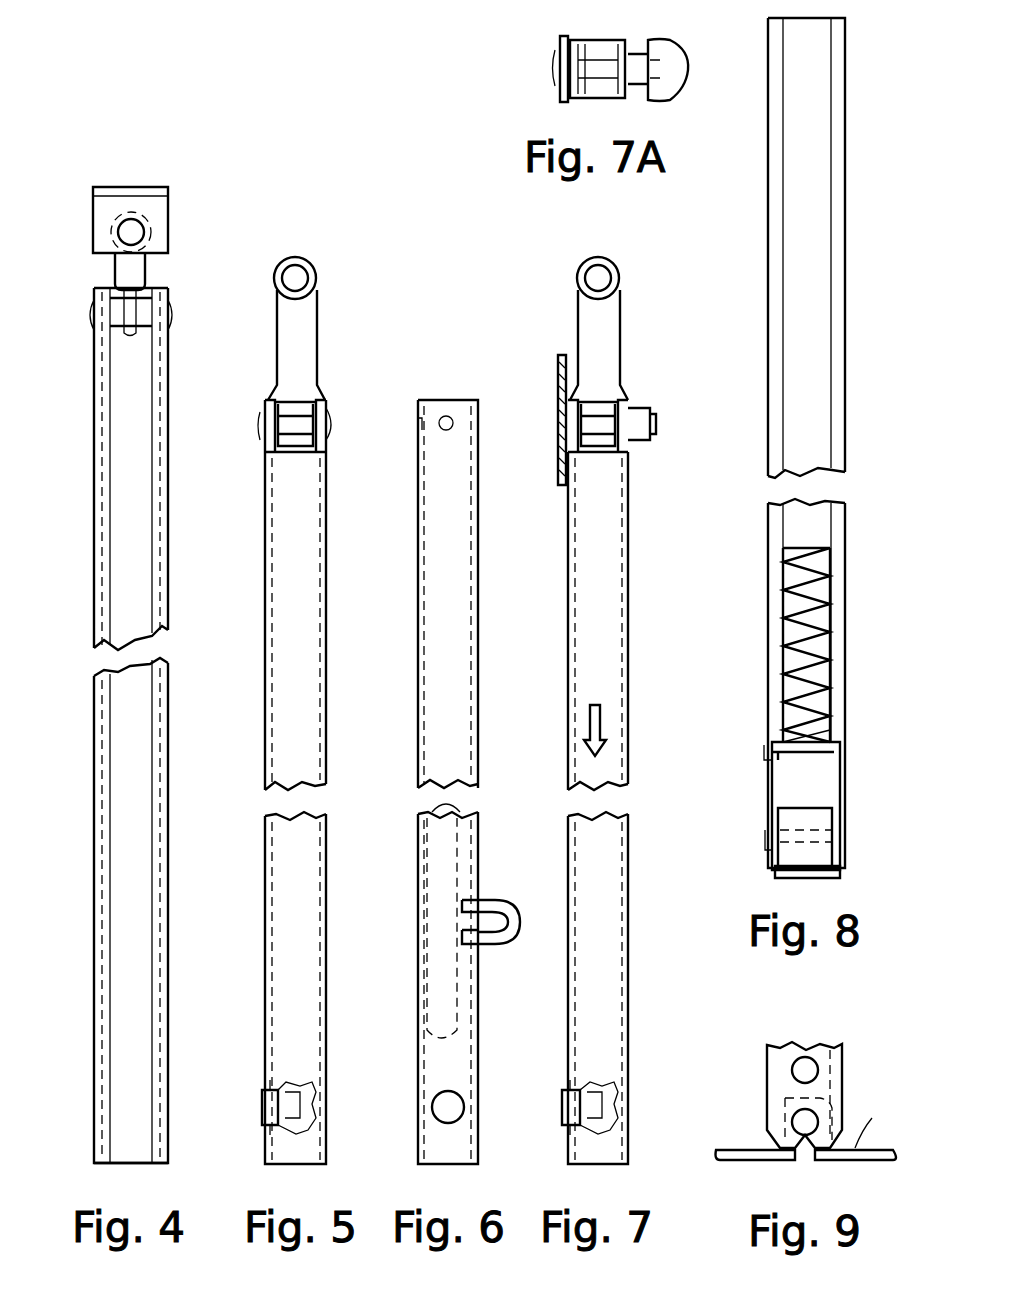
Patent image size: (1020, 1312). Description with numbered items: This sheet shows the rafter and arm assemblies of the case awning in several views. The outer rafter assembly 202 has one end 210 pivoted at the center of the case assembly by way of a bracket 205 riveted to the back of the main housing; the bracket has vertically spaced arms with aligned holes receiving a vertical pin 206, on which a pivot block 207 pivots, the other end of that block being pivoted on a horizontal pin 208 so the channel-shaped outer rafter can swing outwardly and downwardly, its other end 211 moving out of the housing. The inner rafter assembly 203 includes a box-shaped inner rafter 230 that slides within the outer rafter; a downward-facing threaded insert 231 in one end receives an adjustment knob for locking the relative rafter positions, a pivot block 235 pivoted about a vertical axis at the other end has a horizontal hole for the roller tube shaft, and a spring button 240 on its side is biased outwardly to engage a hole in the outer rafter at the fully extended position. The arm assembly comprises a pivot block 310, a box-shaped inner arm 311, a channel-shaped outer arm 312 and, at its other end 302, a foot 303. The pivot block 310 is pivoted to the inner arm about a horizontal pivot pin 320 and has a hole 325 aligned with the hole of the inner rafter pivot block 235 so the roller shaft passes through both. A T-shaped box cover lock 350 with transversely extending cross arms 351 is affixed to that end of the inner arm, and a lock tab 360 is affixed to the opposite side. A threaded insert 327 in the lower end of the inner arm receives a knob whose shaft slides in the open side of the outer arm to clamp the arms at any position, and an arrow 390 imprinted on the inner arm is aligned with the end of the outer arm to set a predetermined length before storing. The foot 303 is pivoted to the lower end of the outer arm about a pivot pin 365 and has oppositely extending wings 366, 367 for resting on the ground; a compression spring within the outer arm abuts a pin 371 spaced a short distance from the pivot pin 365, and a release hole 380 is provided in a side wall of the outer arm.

In FIG. 4, the outer rafter assembly 202 is at (95, 580).
In FIG. 5, the inner rafter assembly 203 is at (326, 690).
In FIG. 6, the inner rafter assembly 203 is at (417, 730).
In FIG. 4, the bracket 205 is at (168, 204).
In FIG. 4, the vertical pin 206 is at (144, 235).
In FIG. 4, the pivot block 207 is at (145, 268).
In FIG. 4, the horizontal pin 208 is at (170, 314).
In FIG. 4, the one end of rafter assembly 210 is at (92, 297).
In FIG. 4, the other end of rafter assembly 211 is at (160, 1163).
In FIG. 5, the inner rafter 230 is at (326, 925).
In FIG. 6, the inner rafter 230 is at (417, 1010).
In FIG. 5, the threaded insert 231 is at (258, 1108).
In FIG. 5, the pivot block 235 is at (316, 340).
In FIG. 6, the spring button 240 is at (520, 928).
In FIG. 8, the other end of arm assembly 302 is at (822, 860).
In FIG. 9, the foot 303 is at (928, 1129).
In FIG. 7, the pivot block 310 is at (612, 346).
In FIG. 7, the inner arm 311 is at (614, 575).
In FIG. 8, the outer arm 312 is at (768, 190).
In FIG. 7, the horizontal pivot pin 320 is at (600, 440).
In FIG. 8, the horizontal pivot pin 320 is at (822, 650).
In FIG. 7, the hole 325 is at (608, 276).
In FIG. 7, the threaded insert 327 is at (560, 1106).
In FIG. 7, the box cover lock 350 is at (642, 410).
In FIG. 7A, the cross arms 351 is at (672, 44).
In FIG. 7, the lock tab 360 is at (558, 385).
In FIG. 7A, the lock tab 360 is at (560, 92).
In FIG. 9, the pivot pin 365 is at (792, 1118).
In FIG. 9, the wing 366 is at (750, 1160).
In FIG. 9, the wing 367 is at (858, 1160).
In FIG. 8, the pin 371 is at (845, 748).
In FIG. 9, the release hole 380 is at (792, 1064).
In FIG. 7, the arrow 390 is at (586, 727).